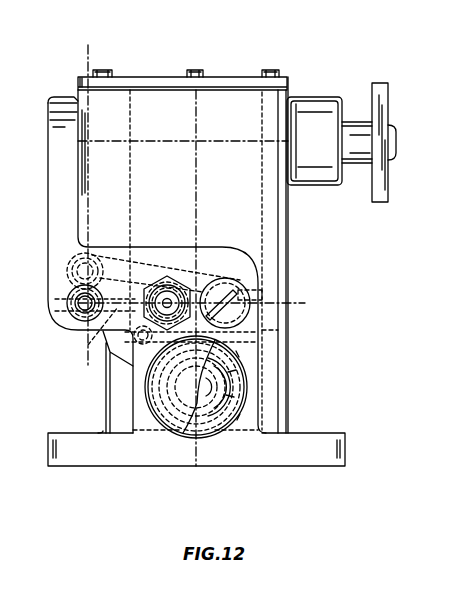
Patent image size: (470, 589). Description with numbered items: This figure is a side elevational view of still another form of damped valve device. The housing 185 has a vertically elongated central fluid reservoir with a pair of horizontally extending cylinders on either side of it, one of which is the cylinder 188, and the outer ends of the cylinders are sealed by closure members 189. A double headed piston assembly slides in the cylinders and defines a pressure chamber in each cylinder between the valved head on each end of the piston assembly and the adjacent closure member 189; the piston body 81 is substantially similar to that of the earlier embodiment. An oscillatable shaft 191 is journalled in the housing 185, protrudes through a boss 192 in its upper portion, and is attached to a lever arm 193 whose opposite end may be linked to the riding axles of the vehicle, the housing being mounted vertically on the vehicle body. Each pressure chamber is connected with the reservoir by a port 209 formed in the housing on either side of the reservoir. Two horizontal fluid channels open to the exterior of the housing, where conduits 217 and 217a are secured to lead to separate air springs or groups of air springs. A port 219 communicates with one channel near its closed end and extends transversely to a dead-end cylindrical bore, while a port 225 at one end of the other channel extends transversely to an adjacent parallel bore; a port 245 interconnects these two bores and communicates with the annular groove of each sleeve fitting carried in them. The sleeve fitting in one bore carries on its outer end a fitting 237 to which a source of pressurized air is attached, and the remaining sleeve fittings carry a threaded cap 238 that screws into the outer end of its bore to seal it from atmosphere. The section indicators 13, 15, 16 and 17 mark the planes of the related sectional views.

The section line 13- 13 is at (196, 35).
The section line 15- 15 is at (27, 303).
The section line 16- 16 is at (10, 141).
The section line 17- 17 is at (88, 365).
The output shaft 81 is at (218, 403).
The housing 185 is at (288, 411).
The cylinder 188 is at (220, 382).
The closure member 189 is at (168, 392).
The oscillatable shaft 191 is at (350, 122).
The boss 192 is at (308, 98).
The lever arm 193 is at (382, 100).
The port 209 is at (282, 332).
The conduit 217 is at (93, 255).
The conduit 217a is at (73, 317).
The port 219 is at (142, 265).
The port 225 is at (87, 343).
The fitting 237 is at (148, 296).
The threaded cap 238 is at (235, 292).
The port 245 is at (200, 287).